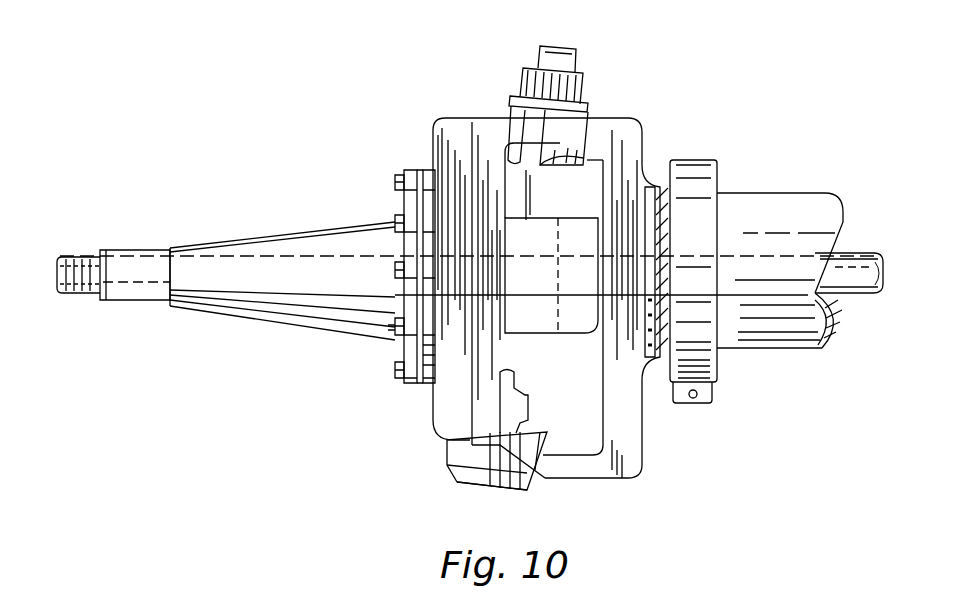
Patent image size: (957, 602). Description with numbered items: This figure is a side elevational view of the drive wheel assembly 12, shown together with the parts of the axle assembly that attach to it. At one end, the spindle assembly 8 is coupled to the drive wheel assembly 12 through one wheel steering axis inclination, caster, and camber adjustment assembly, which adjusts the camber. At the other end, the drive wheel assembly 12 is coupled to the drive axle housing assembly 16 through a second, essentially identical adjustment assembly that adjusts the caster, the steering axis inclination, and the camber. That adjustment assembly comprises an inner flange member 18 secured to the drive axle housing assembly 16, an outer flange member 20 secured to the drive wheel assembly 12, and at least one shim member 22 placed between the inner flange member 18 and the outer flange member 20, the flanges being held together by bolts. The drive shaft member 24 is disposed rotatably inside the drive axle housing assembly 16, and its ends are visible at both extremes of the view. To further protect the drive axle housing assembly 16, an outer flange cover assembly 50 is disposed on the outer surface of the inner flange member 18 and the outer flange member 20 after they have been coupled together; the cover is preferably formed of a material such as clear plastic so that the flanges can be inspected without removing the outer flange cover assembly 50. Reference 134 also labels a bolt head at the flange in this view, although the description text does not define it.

The spindle assembly 8 is at (310, 206).
The drive wheel assembly 12 is at (602, 80).
The drive axle housing assembly 16 is at (790, 222).
The inner flange member 18 is at (404, 383).
The outer flange member 20 is at (426, 382).
The shim member 22 is at (419, 172).
The drive shaft member 24 is at (75, 292).
The outer flange cover assembly 50 is at (697, 185).
The bolt head 134 is at (396, 177).